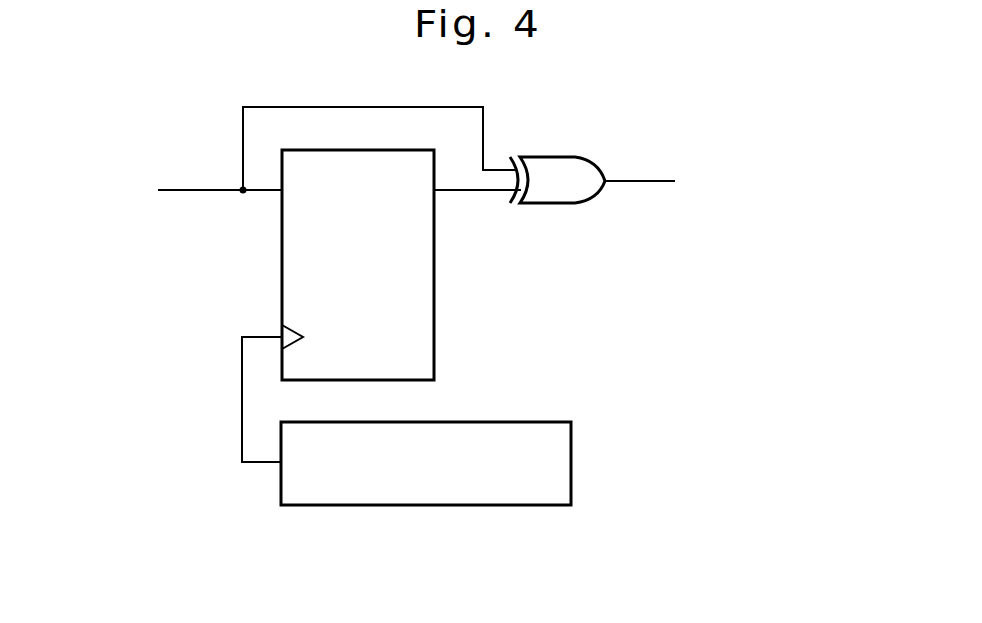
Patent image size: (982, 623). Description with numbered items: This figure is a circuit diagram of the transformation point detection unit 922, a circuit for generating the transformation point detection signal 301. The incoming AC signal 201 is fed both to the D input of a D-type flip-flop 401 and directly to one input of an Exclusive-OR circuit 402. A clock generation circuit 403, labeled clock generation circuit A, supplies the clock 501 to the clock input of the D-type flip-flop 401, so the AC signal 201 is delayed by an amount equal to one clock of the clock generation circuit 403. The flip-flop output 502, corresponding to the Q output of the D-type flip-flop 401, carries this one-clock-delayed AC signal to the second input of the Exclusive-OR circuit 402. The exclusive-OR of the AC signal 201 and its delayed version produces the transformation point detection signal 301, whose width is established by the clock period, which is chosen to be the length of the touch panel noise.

The AC signal 201 is at (194, 194).
The transformation point detection signal 301 is at (642, 186).
The D-type flip-flop 401 is at (361, 148).
The Exclusive-OR (EXOR) circuit 402 is at (563, 158).
The clock generation circuit A 403 is at (500, 421).
The clock signal 501 is at (241, 395).
The flip-flop output 502 is at (484, 196).
The transformation point detection unit 922 is at (619, 366).